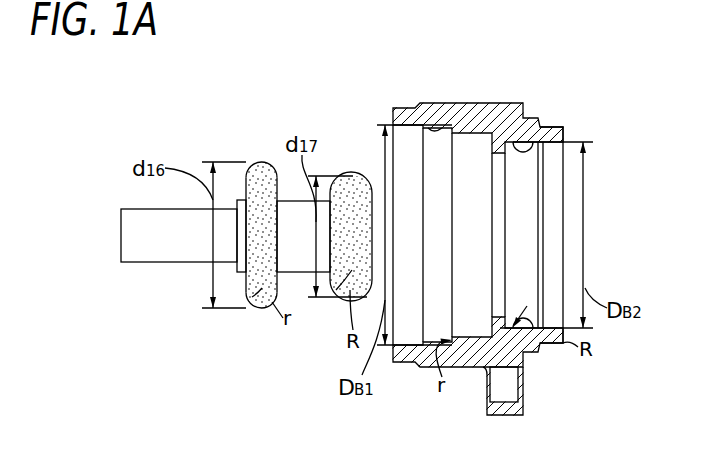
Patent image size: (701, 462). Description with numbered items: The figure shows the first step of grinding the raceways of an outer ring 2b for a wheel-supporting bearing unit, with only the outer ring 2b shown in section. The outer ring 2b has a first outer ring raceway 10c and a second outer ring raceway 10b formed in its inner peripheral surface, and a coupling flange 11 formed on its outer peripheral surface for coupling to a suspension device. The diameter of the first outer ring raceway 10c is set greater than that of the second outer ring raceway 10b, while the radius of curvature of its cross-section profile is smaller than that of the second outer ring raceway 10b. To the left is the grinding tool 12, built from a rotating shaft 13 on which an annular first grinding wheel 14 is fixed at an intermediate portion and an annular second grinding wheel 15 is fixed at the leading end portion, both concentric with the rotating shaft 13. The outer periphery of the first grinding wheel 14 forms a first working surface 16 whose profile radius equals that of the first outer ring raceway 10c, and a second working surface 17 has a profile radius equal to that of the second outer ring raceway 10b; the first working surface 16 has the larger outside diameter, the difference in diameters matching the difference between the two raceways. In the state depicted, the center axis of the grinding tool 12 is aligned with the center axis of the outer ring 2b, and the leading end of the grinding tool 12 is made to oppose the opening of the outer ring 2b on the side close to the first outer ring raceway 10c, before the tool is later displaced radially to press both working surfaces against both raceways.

The rotating shaft 13 is at (140, 222).
The grinding tool 12 is at (230, 211).
The first working surface 16 is at (262, 162).
The first grinding wheel 14 is at (262, 238).
The second working surface 17 is at (343, 222).
The second grinding wheel 15 is at (343, 235).
The outer ring 2b is at (492, 254).
The first outer ring raceway 10c is at (432, 120).
The second outer ring raceway 10b is at (543, 125).
The coupling flange 11 is at (505, 410).